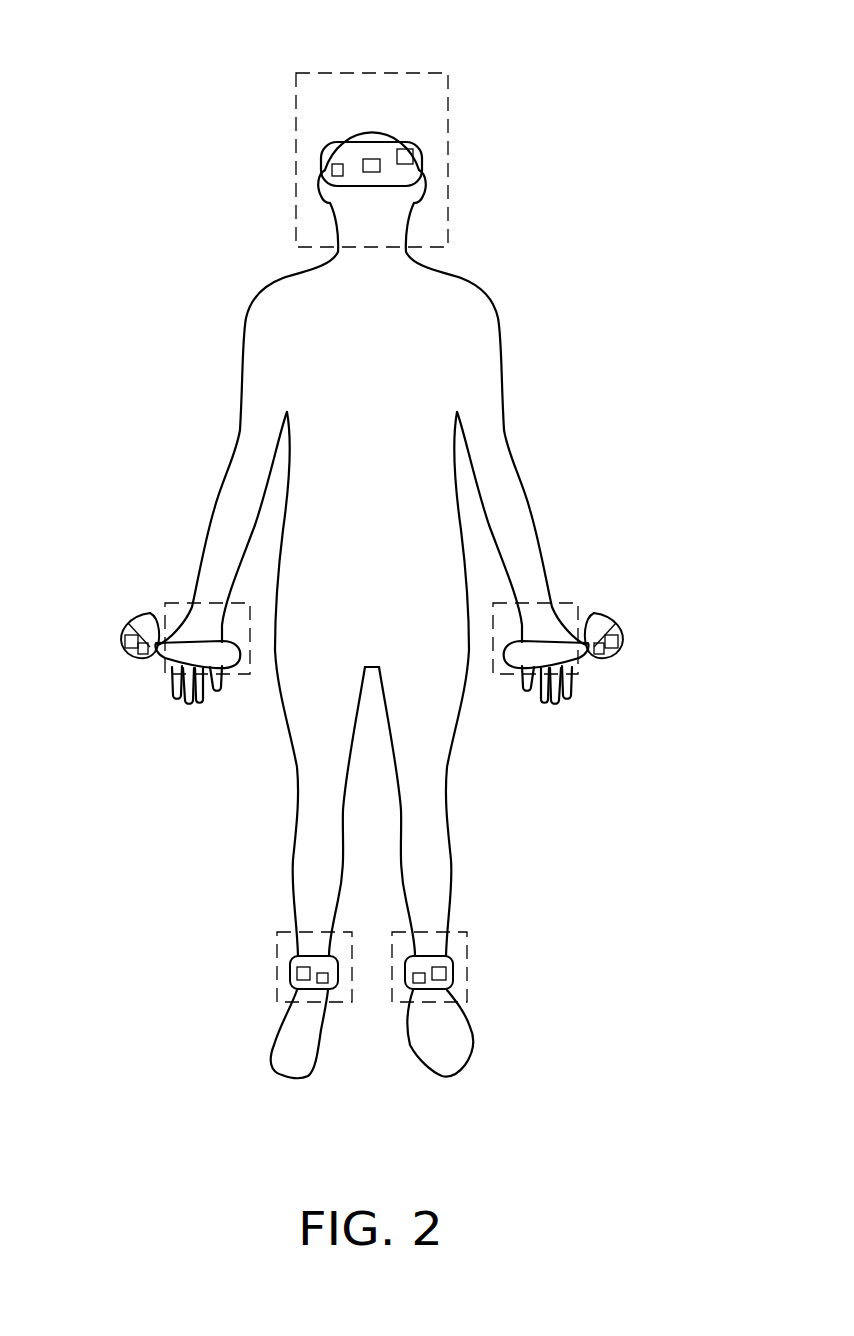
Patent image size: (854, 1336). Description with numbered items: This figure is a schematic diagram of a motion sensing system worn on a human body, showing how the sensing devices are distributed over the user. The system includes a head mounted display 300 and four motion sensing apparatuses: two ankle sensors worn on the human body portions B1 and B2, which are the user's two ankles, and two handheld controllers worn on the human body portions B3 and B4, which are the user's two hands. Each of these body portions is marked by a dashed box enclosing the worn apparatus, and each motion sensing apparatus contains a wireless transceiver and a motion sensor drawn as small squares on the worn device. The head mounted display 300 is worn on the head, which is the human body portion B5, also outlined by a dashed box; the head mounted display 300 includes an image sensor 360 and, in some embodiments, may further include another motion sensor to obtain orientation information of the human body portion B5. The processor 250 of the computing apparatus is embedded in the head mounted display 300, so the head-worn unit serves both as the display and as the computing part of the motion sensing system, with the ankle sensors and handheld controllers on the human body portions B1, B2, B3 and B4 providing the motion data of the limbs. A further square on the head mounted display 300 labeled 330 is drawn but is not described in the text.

The head mounted display 300 is at (350, 152).
The sensor module of head-mounted display 330 is at (332, 173).
The image sensor 360 is at (373, 170).
The processor 250 is at (408, 155).
The human body portion B1 is at (463, 1003).
The human body portion B2 is at (282, 1003).
The human body portion B3 is at (504, 677).
The human body portion B4 is at (240, 677).
The human body portion B5 is at (418, 73).